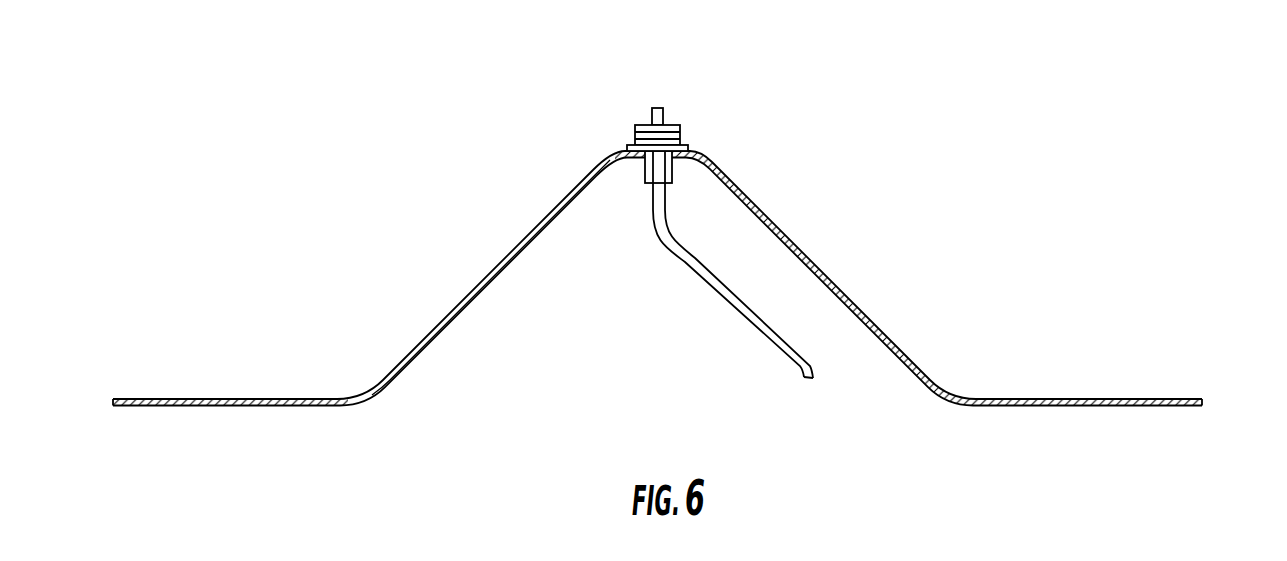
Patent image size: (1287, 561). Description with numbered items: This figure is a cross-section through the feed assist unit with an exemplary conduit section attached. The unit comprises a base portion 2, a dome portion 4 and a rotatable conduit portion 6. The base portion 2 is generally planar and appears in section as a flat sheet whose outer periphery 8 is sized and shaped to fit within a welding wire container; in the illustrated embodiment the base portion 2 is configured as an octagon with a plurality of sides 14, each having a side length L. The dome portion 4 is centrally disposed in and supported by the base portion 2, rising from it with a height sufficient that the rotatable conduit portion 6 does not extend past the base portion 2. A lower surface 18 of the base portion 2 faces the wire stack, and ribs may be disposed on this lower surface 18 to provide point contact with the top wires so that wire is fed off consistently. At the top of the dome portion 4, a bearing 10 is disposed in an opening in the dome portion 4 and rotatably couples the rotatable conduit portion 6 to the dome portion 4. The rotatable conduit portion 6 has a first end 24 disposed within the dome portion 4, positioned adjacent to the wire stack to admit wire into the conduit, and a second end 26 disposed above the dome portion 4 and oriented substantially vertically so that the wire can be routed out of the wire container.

The base portion 2 is at (1110, 398).
The dome portion 4 is at (836, 284).
The rotatable conduit portion 6 is at (733, 318).
The outer periphery 8 is at (103, 402).
The bearing 10 is at (681, 131).
The sides 14 is at (1218, 400).
The lower surface 18 is at (295, 406).
The first end 24 is at (805, 380).
The second end 26 is at (689, 109).